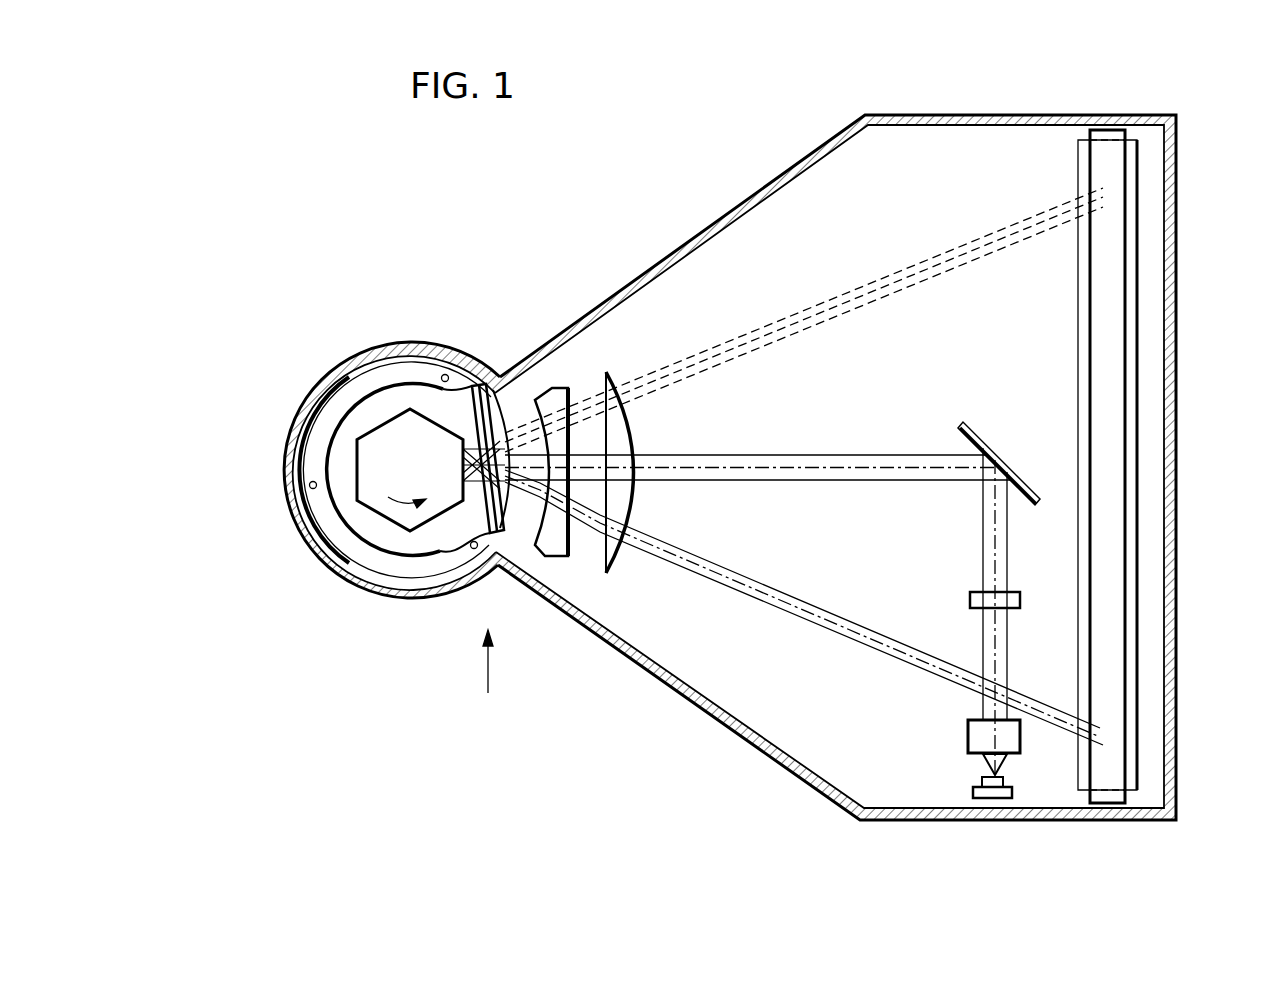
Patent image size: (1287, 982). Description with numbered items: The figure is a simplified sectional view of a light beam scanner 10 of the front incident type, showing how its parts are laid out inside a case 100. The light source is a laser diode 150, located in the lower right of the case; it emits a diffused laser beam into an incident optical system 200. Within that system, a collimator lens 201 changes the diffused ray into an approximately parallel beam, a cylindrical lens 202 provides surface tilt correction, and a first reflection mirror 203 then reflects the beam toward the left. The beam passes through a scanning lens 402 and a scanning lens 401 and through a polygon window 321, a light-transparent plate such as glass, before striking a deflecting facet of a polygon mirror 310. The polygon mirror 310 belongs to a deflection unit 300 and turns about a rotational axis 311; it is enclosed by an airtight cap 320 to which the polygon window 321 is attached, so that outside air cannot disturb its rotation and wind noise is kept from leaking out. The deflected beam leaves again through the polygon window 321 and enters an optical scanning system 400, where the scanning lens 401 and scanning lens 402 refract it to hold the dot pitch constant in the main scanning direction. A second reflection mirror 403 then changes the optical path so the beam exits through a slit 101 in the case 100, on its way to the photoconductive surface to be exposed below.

The light beam scanner 10 is at (711, 74).
The case 100 is at (1178, 560).
The slit 101 is at (1133, 155).
The laser diode 150 is at (993, 800).
The incident optical system 200 is at (945, 745).
The collimator lens 201 is at (1014, 738).
The cylindrical lens 202 is at (1018, 598).
The first reflection mirror 203 is at (1030, 504).
The deflection unit 300 is at (343, 527).
The polygon mirror 310 is at (370, 458).
The rotational axis 311 is at (410, 470).
The airtight cap 320 is at (375, 392).
The polygon window 321 is at (472, 382).
The optical scanning system 400 is at (822, 200).
The scanning lens 401 is at (552, 395).
The scanning lens 402 is at (612, 375).
The second reflection mirror 403 is at (1115, 367).